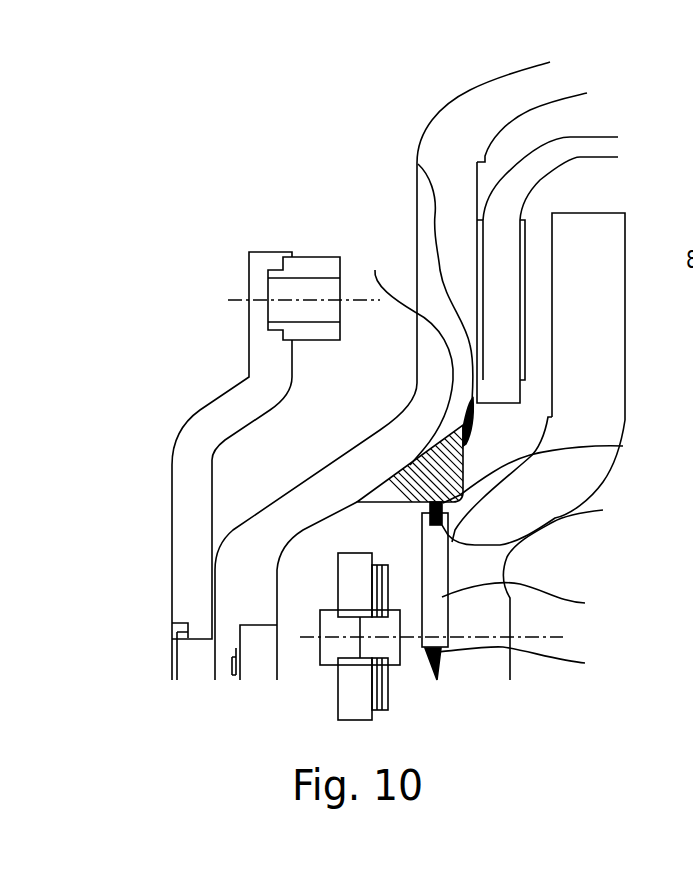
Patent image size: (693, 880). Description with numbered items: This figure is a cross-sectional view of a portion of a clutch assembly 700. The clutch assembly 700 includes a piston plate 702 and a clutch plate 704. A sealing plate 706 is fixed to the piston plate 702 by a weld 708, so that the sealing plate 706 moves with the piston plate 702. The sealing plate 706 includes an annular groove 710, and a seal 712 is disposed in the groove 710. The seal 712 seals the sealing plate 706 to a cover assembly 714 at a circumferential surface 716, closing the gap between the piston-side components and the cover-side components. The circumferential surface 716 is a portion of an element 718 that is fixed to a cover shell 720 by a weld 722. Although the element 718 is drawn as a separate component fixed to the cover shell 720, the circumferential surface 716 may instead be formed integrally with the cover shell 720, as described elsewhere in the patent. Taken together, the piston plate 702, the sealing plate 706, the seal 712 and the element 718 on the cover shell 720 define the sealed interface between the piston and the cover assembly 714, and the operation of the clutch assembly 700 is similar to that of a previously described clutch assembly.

The clutch assembly 700 is at (323, 157).
The piston plate 702 is at (612, 350).
The clutch plate 704 is at (505, 242).
The sealing plate 706 is at (585, 603).
The weld 708 is at (585, 663).
The annular groove 710 is at (603, 510).
The seal 712 is at (623, 447).
The cover assembly 714 is at (237, 487).
The circumferential surface 716 is at (407, 468).
The element 718 is at (375, 270).
The cover shell 720 is at (270, 582).
The weld 722 is at (418, 164).